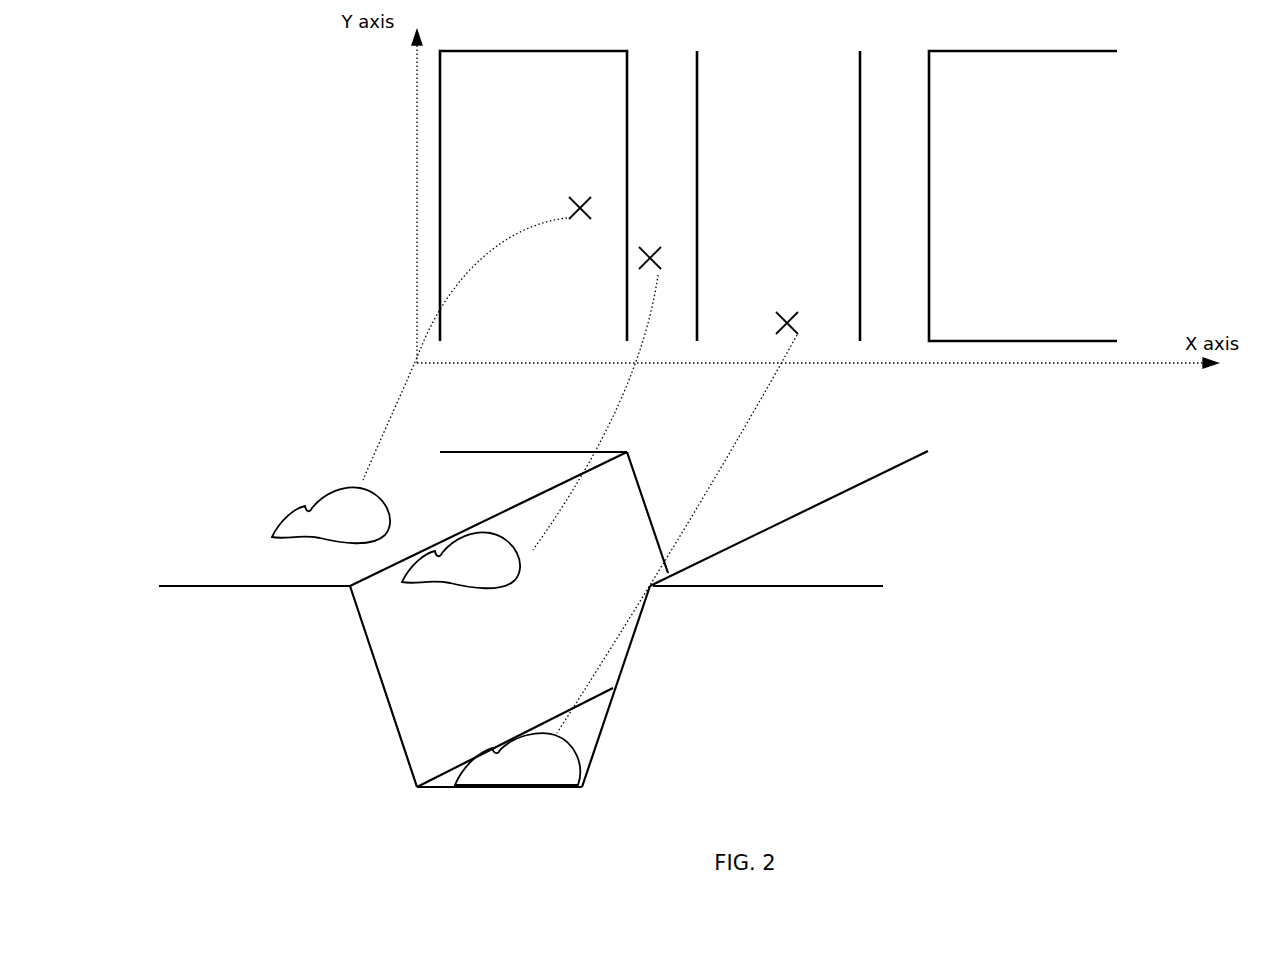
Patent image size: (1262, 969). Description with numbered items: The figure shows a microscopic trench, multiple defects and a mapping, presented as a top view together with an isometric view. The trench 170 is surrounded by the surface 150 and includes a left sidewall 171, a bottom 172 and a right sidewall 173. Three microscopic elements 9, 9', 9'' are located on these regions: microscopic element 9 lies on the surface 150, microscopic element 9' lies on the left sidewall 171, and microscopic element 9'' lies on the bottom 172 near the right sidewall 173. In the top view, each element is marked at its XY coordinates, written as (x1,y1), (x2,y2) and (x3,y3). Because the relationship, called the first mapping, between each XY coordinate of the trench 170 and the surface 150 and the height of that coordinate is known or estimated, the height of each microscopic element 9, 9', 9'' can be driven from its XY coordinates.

The surface 150 is at (505, 96).
The trench 170 is at (850, 458).
The left sidewall 171 is at (640, 87).
The bottom 172 is at (757, 86).
The right sidewall 173 is at (874, 86).
The microscopic element 9 is at (441, 359).
The microscopic element 9' is at (545, 406).
The microscopic element 9'' is at (637, 537).